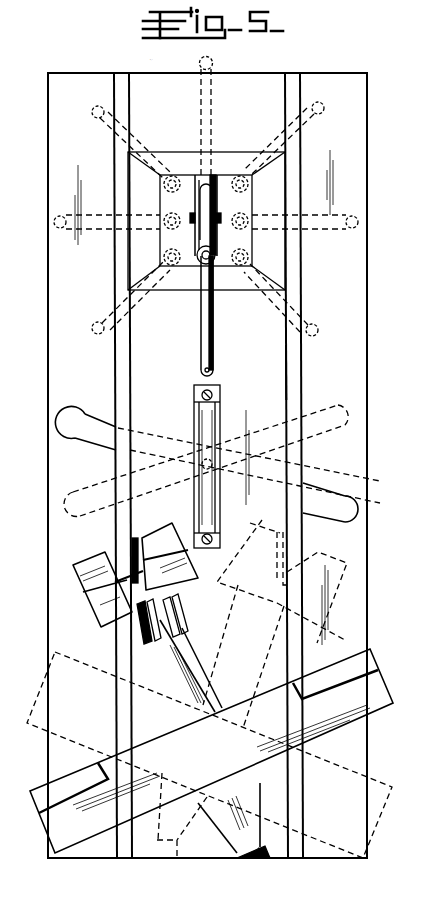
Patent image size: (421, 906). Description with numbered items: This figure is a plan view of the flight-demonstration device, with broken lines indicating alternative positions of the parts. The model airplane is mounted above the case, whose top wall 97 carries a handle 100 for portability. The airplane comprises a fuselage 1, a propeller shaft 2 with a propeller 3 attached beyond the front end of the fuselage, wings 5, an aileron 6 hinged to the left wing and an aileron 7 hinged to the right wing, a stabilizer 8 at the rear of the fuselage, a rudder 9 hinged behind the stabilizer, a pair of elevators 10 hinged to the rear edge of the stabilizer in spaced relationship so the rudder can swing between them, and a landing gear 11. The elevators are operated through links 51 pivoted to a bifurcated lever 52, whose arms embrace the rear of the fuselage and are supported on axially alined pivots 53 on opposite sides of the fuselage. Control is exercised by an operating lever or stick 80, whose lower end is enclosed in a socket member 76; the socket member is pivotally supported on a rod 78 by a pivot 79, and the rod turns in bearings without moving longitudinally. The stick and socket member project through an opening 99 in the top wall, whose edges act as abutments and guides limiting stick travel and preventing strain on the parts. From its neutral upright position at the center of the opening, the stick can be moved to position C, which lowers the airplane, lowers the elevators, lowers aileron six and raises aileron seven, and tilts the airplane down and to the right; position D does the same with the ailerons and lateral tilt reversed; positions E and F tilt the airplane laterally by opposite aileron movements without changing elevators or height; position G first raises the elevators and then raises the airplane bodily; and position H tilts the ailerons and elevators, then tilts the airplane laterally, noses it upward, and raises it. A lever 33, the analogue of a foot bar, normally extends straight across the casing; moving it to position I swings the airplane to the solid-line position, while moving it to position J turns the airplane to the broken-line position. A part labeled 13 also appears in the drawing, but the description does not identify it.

The fuselage 1 is at (180, 665).
The propeller shaft 2 is at (243, 852).
The propeller 3 is at (259, 858).
The wings 5 is at (87, 835).
The aileron 6 is at (340, 663).
The aileron 7 is at (70, 777).
The stabilizer 8 is at (102, 608).
The rudder 9 is at (136, 546).
The elevators 10 is at (95, 565).
The landing gear 11 is at (318, 116).
The pin 13 is at (213, 108).
The lever 33 is at (84, 430).
The links 51 is at (140, 616).
The bifurcated lever 52 is at (172, 616).
The pivots 53 is at (146, 636).
The socket member 76 is at (202, 264).
The rod 78 is at (218, 152).
The pivot 79 is at (218, 213).
The operating lever or stick 80 is at (213, 332).
The top wall 97 is at (268, 373).
The opening 99 is at (243, 240).
The handle 100 is at (207, 420).
The position C is at (138, 298).
The position D is at (270, 297).
The position E is at (92, 228).
The position F is at (326, 226).
The position G is at (102, 132).
The position H is at (200, 343).
The position I is at (358, 505).
The position J is at (358, 416).